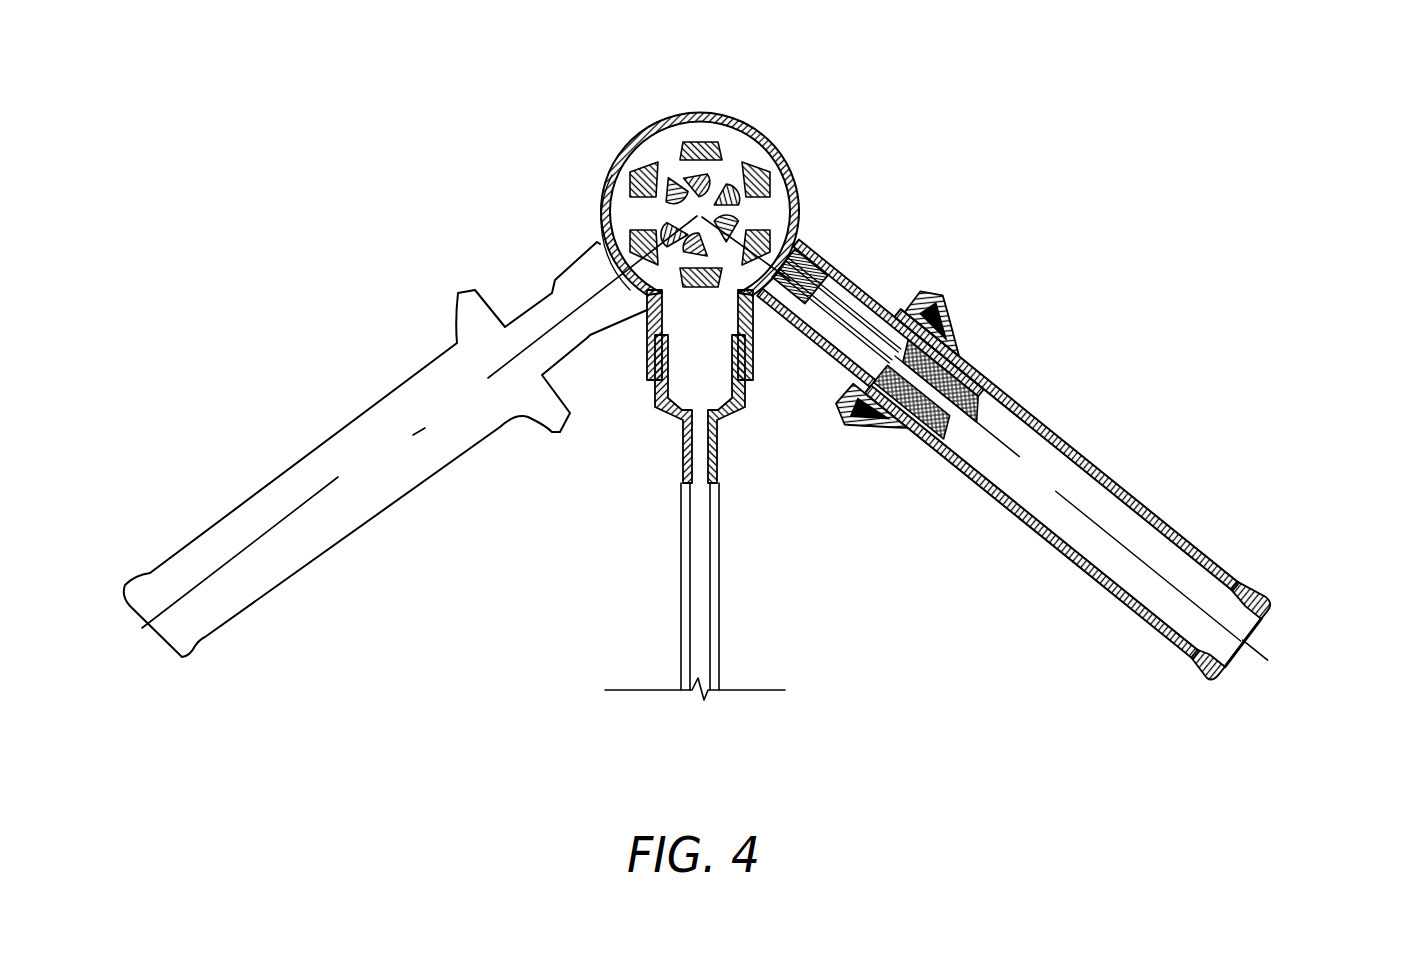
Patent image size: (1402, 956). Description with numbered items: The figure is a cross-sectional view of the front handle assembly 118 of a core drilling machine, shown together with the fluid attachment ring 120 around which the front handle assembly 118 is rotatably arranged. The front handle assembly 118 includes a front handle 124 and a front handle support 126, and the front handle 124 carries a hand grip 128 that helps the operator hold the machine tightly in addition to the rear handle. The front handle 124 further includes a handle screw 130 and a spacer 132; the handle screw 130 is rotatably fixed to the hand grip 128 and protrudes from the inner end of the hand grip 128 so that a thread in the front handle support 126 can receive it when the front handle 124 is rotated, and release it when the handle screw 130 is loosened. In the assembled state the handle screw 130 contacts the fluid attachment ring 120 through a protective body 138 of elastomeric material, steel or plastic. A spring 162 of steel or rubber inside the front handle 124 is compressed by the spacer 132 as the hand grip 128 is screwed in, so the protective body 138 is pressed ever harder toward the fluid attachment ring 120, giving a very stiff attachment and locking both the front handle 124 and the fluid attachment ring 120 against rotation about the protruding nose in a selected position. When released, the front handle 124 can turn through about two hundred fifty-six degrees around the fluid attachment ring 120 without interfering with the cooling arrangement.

The front handle assembly 118 is at (538, 126).
The fluid attachment ring 120 is at (778, 150).
The front handle 124 is at (1263, 620).
The front handle support 126 is at (822, 270).
The hand grip 128 is at (1117, 482).
The handle screw 130 is at (935, 398).
The spacer 132 is at (836, 346).
The protective body 138 is at (800, 243).
The spring 162 is at (945, 363).